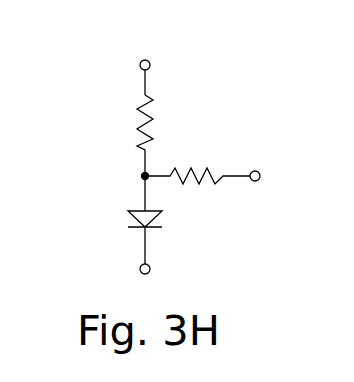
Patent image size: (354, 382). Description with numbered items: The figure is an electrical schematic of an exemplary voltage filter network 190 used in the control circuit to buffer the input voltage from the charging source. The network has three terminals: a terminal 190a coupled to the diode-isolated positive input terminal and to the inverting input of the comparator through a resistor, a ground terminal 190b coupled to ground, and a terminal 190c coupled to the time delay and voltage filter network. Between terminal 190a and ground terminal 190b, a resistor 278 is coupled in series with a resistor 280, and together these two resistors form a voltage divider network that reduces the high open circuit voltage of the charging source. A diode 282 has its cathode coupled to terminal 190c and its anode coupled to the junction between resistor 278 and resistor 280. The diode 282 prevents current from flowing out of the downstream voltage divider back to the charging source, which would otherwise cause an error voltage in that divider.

The voltage filter network 190 is at (162, 54).
The terminal 190a is at (150, 69).
The ground terminal 190b is at (277, 172).
The terminal 190c is at (149, 273).
The resistor 278 is at (138, 127).
The resistor 280 is at (195, 170).
The diode 282 is at (160, 212).